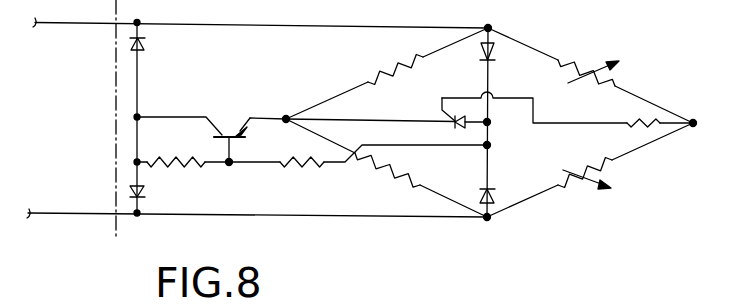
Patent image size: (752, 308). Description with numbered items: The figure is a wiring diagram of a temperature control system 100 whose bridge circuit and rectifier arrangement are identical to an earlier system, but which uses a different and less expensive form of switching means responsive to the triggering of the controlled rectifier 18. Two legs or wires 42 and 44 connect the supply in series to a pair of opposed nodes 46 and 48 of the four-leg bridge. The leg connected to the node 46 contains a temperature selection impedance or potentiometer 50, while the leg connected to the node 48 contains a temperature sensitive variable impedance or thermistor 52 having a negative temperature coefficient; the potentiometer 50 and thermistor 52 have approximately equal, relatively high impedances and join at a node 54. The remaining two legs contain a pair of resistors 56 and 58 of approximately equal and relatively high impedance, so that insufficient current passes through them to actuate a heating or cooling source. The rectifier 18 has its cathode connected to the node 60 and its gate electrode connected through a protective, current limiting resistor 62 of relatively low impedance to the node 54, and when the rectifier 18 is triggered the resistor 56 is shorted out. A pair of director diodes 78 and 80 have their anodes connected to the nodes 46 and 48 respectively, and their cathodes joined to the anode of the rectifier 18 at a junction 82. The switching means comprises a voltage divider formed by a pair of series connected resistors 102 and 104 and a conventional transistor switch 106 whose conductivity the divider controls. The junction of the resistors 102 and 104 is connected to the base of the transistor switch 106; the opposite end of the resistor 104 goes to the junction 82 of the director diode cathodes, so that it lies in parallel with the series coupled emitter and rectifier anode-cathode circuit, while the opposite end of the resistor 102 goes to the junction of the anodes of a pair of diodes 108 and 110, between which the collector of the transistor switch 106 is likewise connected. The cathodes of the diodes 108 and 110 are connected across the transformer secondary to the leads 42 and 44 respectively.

The temperature control system 100 is at (338, 24).
The leg or wire 42 is at (237, 25).
The leg or wire 44 is at (254, 212).
The node 46 is at (489, 27).
The node 48 is at (488, 219).
The temperature selection impedance or potentiometer 50 is at (590, 70).
The temperature sensitive variable impedance or thermistor 52 is at (608, 172).
The node 54 is at (693, 121).
The impedance or resistor 56 is at (385, 72).
The impedance or resistor 58 is at (391, 179).
The node 60 is at (286, 117).
The protective or current limiting resistor 62 is at (636, 120).
The director diode 78 is at (494, 50).
The director diode 80 is at (492, 196).
The junction 82 is at (490, 125).
The controlled rectifier 18 is at (461, 126).
The resistor 102 is at (177, 158).
The resistor 104 is at (291, 158).
The transistor switch 106 is at (228, 134).
The diode 108 is at (148, 47).
The diode 110 is at (146, 189).